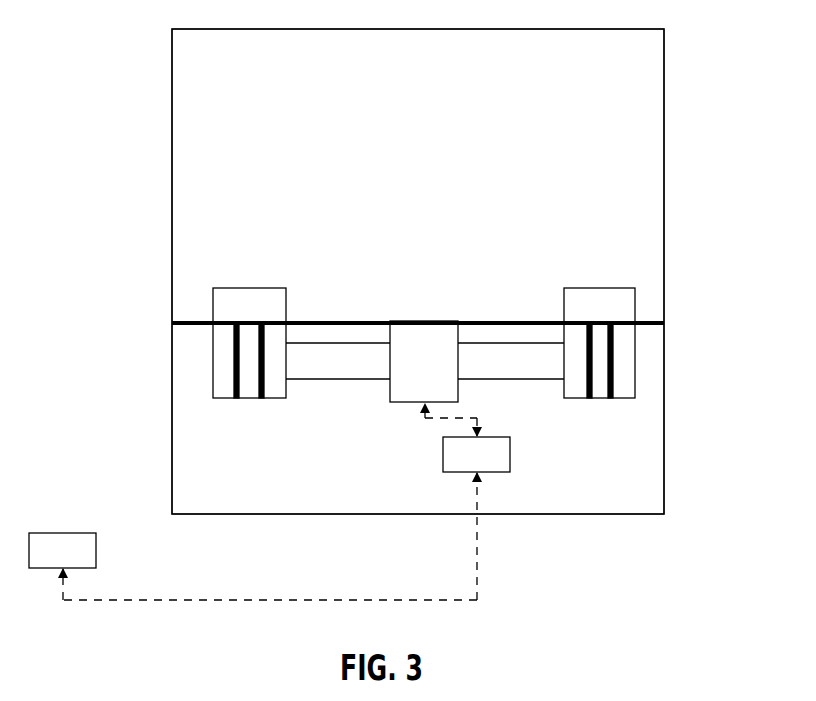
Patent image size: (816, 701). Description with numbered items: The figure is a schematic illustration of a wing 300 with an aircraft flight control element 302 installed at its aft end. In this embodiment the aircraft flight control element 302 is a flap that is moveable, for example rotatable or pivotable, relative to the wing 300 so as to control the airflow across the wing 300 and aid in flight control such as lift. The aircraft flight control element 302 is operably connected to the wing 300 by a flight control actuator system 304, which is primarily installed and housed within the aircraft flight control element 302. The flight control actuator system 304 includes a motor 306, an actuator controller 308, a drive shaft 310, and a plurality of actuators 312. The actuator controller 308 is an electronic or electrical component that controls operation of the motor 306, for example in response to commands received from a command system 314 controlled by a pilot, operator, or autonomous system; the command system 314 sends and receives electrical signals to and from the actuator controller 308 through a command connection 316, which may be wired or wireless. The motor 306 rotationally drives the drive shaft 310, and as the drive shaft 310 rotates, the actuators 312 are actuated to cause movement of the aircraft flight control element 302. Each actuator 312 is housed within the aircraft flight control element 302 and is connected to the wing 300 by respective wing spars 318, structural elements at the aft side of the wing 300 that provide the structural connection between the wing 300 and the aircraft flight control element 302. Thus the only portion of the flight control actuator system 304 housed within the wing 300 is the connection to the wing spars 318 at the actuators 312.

The wing 300 is at (652, 113).
The aircraft flight control element 302 is at (643, 468).
The flight control actuator system 304 is at (498, 494).
The motor 306 is at (420, 335).
The actuator controller 308 is at (502, 457).
The drive shaft 310 is at (335, 382).
The actuators 312 is at (637, 368).
The command system 314 is at (62, 532).
The command connection 316 is at (262, 600).
The wing spars 318 is at (250, 297).